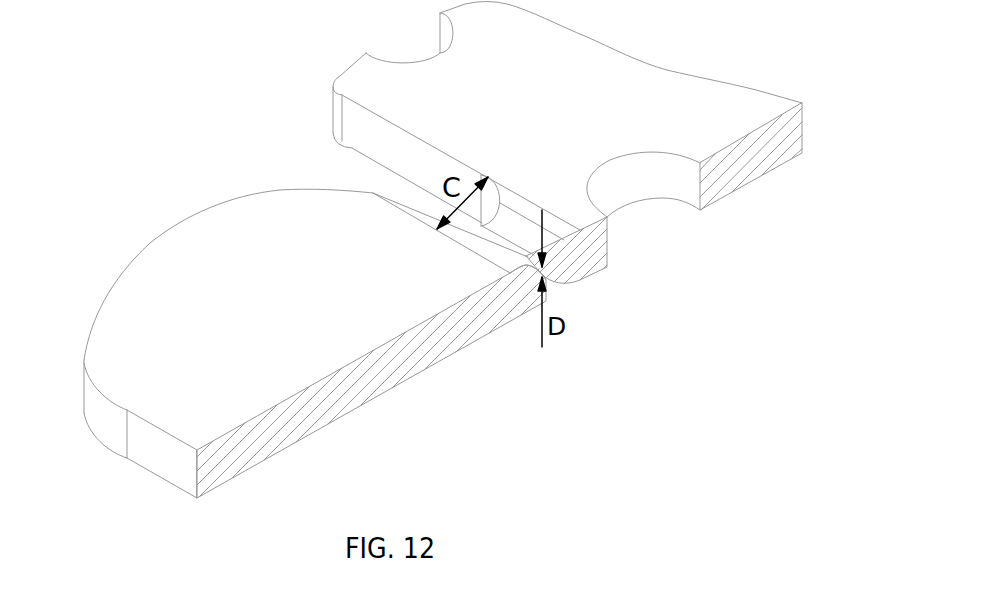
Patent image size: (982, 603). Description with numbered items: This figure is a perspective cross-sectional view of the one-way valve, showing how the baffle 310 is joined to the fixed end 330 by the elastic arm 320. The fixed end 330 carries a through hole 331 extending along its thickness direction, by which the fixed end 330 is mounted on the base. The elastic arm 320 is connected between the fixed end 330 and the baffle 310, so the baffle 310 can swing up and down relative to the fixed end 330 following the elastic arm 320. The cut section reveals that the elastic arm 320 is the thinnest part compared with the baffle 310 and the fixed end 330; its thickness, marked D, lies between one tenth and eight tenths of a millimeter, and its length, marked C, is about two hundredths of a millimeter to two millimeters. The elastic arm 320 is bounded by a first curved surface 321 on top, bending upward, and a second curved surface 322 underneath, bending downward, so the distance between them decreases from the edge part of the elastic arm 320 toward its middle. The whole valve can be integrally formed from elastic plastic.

The baffle 310 is at (344, 343).
The elastic arm 320 is at (478, 247).
The first curved surface 321 is at (510, 218).
The second curved surface 322 is at (570, 280).
The fixed end 330 is at (567, 143).
The through hole 331 is at (643, 163).